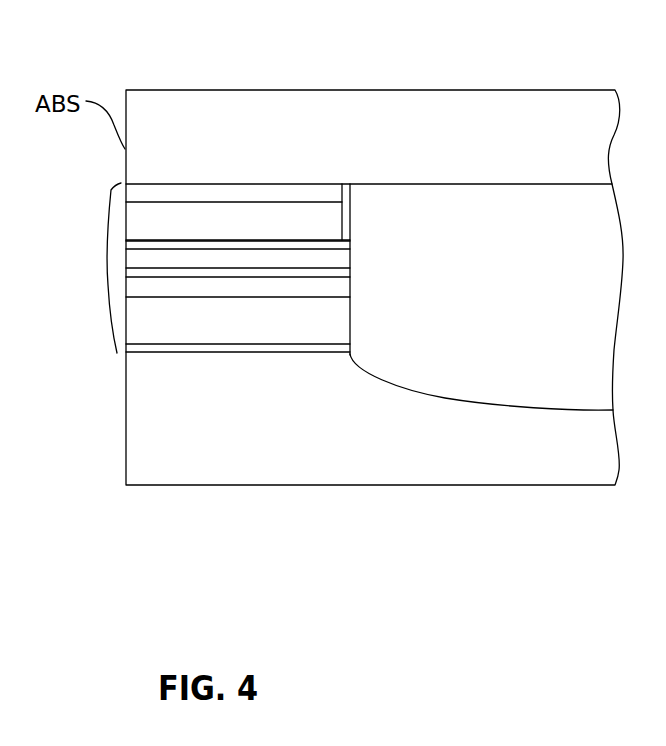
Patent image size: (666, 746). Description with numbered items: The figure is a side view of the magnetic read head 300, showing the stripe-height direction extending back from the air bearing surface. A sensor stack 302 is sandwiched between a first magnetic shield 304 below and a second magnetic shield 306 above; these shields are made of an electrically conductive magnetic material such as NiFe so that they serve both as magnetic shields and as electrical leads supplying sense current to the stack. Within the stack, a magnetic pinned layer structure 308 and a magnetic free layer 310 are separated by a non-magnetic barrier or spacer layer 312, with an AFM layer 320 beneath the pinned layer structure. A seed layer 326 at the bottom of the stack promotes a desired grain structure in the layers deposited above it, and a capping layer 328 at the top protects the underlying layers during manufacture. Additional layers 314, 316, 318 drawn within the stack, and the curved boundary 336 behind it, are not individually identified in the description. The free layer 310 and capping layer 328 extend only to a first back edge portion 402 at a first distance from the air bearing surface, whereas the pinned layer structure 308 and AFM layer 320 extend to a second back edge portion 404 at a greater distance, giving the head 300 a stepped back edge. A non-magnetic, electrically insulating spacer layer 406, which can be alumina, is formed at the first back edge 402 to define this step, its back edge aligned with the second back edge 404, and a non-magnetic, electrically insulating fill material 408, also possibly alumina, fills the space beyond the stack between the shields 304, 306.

The magnetic read head 300 is at (289, 85).
The sensor stack 302 is at (111, 190).
The first magnetic shield 304 is at (270, 400).
The second magnetic shield 306 is at (180, 139).
The magnetic pinned layer structure 308 is at (365, 297).
The magnetic free layer 310 is at (143, 222).
The non-magnetic barrier or spacer layer 312 is at (140, 259).
The seed layer 314 is at (136, 297).
The first free layer 316 is at (136, 275).
The second free layer 318 is at (143, 286).
The AFM layer 320 is at (133, 318).
The seed layer 326 is at (260, 348).
The capping layer 328 is at (321, 195).
The insulating layer boundary 336 is at (510, 348).
The first back edge portion 402 is at (350, 207).
The second back edge portion 404 is at (350, 310).
The non-magnetic, electrically insulating spacer layer 406 is at (346, 230).
The non-magnetic, electrically insulating fill material 408 is at (527, 259).